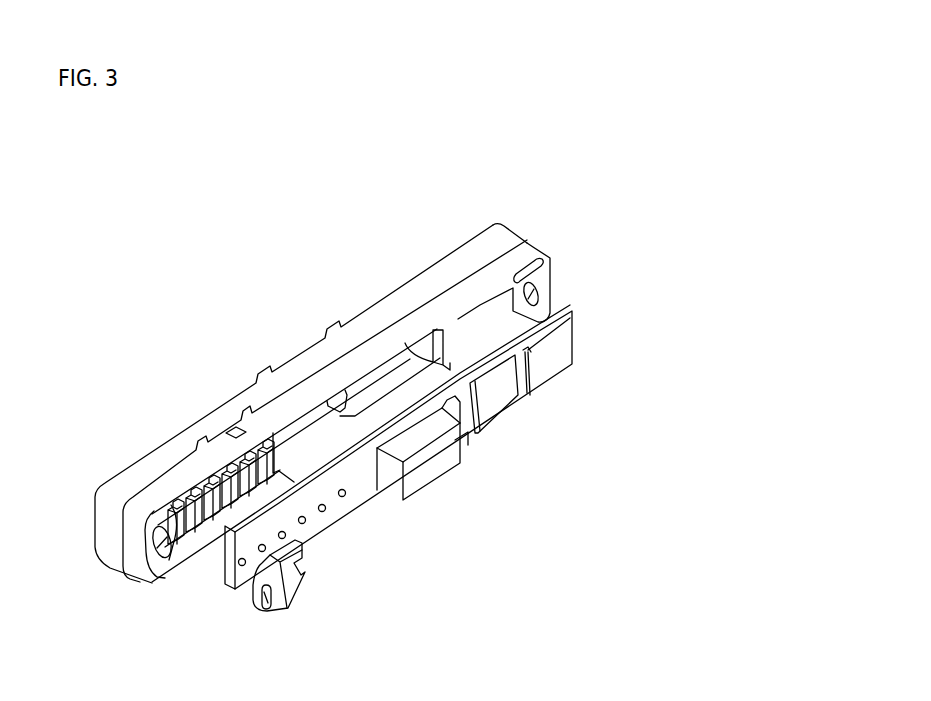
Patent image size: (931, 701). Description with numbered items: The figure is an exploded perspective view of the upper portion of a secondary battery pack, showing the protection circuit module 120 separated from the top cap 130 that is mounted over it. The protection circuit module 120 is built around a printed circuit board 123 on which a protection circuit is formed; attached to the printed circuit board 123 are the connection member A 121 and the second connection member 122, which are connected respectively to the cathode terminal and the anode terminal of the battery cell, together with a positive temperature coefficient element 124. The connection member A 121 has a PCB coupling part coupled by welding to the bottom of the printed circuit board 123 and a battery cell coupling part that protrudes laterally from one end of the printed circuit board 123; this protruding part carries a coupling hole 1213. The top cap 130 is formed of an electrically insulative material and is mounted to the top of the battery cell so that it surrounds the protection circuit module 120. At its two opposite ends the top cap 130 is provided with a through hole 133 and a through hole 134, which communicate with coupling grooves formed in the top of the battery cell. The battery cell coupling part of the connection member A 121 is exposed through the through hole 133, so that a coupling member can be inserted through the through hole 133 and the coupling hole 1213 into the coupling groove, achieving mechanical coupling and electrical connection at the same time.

The protection circuit module 120 is at (492, 477).
The connection member A 121 is at (320, 606).
The coupling hole 1213 is at (312, 628).
The connection member 122 is at (420, 440).
The printed circuit board 123 is at (350, 497).
The positive temperature coefficient element 124 is at (493, 390).
The top cap 130 is at (200, 398).
The through hole 133 is at (164, 538).
The through hole 134 is at (548, 268).